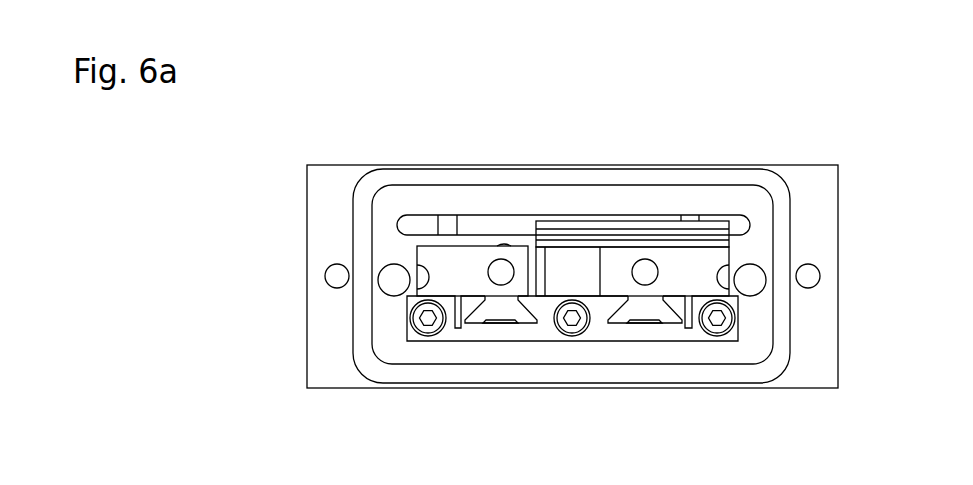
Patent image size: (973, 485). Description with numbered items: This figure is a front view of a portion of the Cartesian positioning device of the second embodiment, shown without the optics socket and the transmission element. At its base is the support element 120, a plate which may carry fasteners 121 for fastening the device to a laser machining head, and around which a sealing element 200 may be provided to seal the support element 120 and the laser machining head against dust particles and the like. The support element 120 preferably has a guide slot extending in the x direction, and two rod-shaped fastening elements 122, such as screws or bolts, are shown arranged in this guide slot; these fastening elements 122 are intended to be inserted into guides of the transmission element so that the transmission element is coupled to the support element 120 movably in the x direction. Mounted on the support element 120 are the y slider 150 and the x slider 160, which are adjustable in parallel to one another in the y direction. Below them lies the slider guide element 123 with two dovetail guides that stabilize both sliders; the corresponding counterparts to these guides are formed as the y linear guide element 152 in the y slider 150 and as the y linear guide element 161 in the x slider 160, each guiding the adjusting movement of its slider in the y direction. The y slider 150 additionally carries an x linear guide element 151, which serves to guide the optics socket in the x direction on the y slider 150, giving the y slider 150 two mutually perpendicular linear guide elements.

The support element 120 is at (813, 362).
The fasteners 121 is at (812, 275).
The fastening element 122 is at (448, 222).
The slider guide element 123 is at (522, 333).
The y slider 150 is at (660, 256).
The x linear guide element 151 is at (717, 235).
The y linear guide element 152 is at (640, 307).
The x slider 160 is at (477, 255).
The y linear guide element 161 is at (478, 317).
The sealing element 200 is at (707, 370).